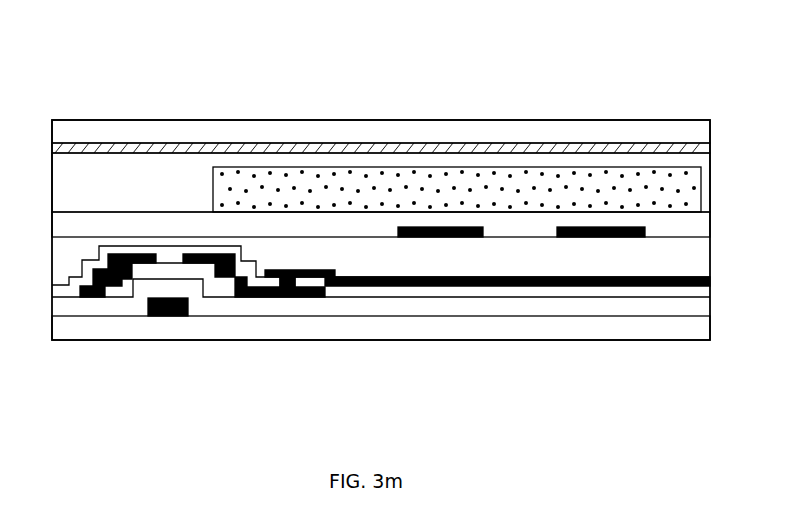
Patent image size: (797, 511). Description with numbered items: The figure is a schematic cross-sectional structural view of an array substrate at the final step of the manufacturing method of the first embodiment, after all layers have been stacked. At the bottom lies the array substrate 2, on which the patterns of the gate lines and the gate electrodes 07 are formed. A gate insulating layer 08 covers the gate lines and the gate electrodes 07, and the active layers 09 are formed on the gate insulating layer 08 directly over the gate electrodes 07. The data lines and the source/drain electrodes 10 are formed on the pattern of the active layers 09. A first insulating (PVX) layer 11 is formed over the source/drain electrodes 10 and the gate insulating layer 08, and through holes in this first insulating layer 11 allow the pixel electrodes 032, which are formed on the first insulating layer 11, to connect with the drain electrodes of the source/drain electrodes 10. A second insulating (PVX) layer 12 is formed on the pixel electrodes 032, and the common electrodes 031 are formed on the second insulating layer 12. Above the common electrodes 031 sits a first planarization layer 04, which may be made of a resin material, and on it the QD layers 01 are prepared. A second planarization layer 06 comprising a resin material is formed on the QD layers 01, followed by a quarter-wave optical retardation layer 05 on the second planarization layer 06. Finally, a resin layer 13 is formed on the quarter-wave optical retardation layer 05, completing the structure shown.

The array substrate 2 is at (124, 318).
The QD layer 01 is at (352, 168).
The first planarization layer 04 is at (222, 222).
The quarter-wave optical retardation layer 05 is at (435, 145).
The second planarization layer 06 is at (517, 163).
The gate electrode 07 is at (163, 317).
The gate insulating layer 08 is at (284, 290).
The active layer 09 is at (212, 262).
The source/drain electrodes 10 is at (227, 228).
The first insulating (PVX) layer 11 is at (286, 290).
The second insulating (PVX) layer 12 is at (540, 256).
The resin layer 13 is at (579, 135).
The common electrode 031 is at (602, 237).
The pixel electrode 032 is at (465, 240).